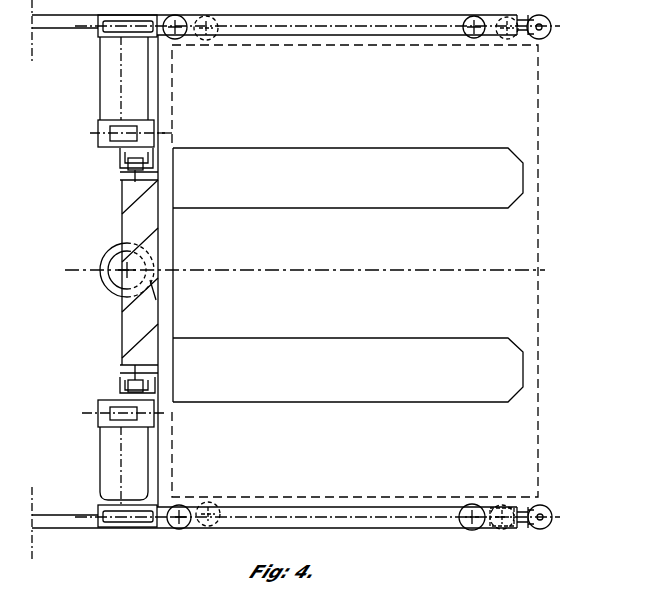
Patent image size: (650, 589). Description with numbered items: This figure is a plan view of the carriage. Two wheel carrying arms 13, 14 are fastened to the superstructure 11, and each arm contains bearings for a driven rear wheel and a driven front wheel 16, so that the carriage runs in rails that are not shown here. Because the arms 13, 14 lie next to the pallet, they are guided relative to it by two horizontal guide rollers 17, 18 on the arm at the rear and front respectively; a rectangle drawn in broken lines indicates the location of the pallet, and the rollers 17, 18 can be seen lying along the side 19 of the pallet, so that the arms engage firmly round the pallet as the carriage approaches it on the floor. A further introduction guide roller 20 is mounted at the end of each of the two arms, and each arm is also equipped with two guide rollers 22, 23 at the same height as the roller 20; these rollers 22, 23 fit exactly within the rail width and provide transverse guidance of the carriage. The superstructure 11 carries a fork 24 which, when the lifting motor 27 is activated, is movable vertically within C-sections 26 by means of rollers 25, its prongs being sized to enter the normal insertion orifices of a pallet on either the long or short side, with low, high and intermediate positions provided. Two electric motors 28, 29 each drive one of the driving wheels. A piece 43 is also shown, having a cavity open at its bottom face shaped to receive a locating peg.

The superstructure 11 is at (128, 333).
The wheel carrying arm 13 is at (282, 513).
The wheel carrying arm 14 is at (283, 30).
The front wheel 16 is at (494, 530).
The horizontal guide roller 17 is at (214, 500).
The horizontal guide roller 18 is at (510, 500).
The side of the pallet 19 is at (387, 497).
The introduction guide roller 20 is at (538, 38).
The guide roller 22 is at (172, 530).
The guide roller 23 is at (471, 530).
The fork 24 is at (345, 158).
The rollers 25 is at (120, 172).
The C-sections 26 is at (120, 153).
The lifting motor 27 is at (109, 259).
The electric motor 28 is at (105, 445).
The electric motor 29 is at (107, 72).
The piece 43 is at (150, 295).